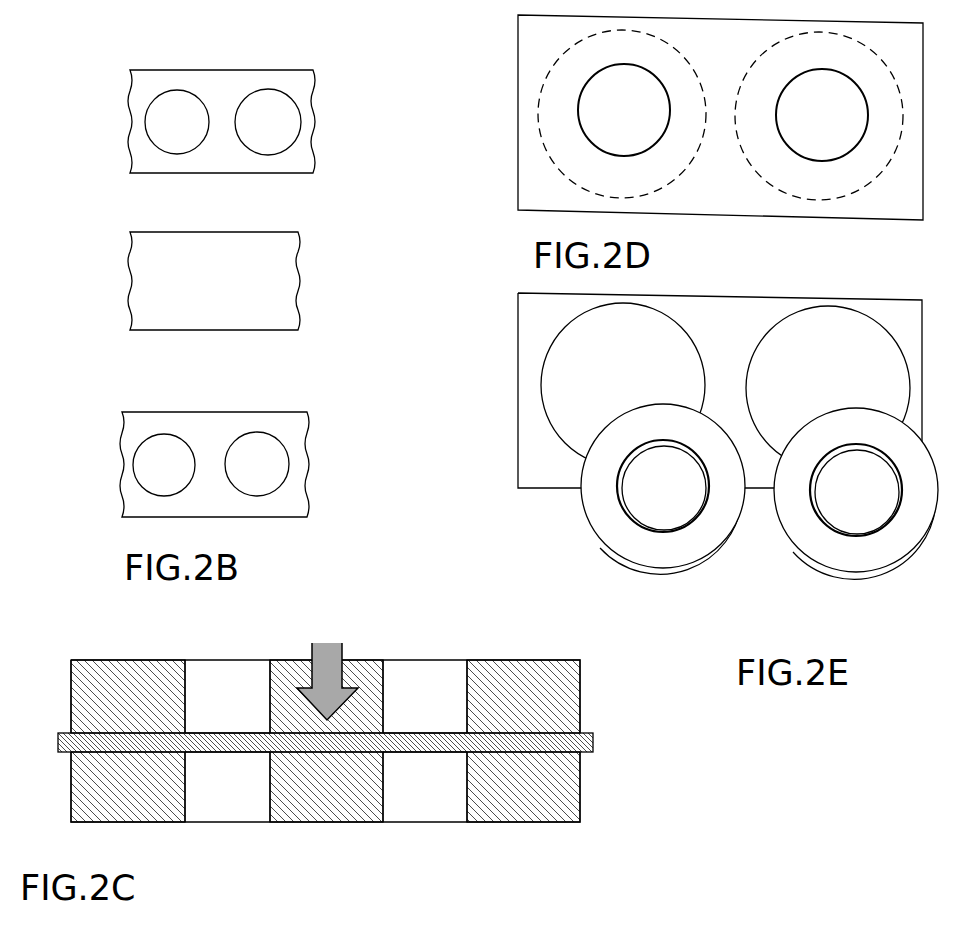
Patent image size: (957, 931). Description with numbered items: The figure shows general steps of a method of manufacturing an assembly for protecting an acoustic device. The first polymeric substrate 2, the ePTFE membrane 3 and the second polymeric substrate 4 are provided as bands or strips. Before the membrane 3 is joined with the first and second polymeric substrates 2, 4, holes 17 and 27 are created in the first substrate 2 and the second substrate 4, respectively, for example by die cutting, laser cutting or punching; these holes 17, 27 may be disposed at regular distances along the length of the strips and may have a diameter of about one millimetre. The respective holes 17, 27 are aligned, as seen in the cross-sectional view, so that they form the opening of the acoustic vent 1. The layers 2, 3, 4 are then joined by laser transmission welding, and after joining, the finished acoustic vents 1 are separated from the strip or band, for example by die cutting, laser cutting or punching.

In FIG. 2E, the acoustic vent 1 is at (697, 547).
In FIG. 2B, the first polymeric substrate 2 is at (297, 83).
In FIG. 2C, the first polymeric substrate 2 is at (568, 698).
In FIG. 2B, the ePTFE membrane 3 is at (288, 275).
In FIG. 2C, the ePTFE membrane 3 is at (593, 742).
In FIG. 2B, the second polymeric substrate 4 is at (287, 433).
In FIG. 2C, the second polymeric substrate 4 is at (568, 808).
In FIG. 2B, the holes in first substrate 17 is at (157, 117).
In FIG. 2C, the holes in first substrate 17 is at (223, 675).
In FIG. 2B, the holes in second substrate 27 is at (147, 460).
In FIG. 2C, the holes in second substrate 27 is at (227, 808).